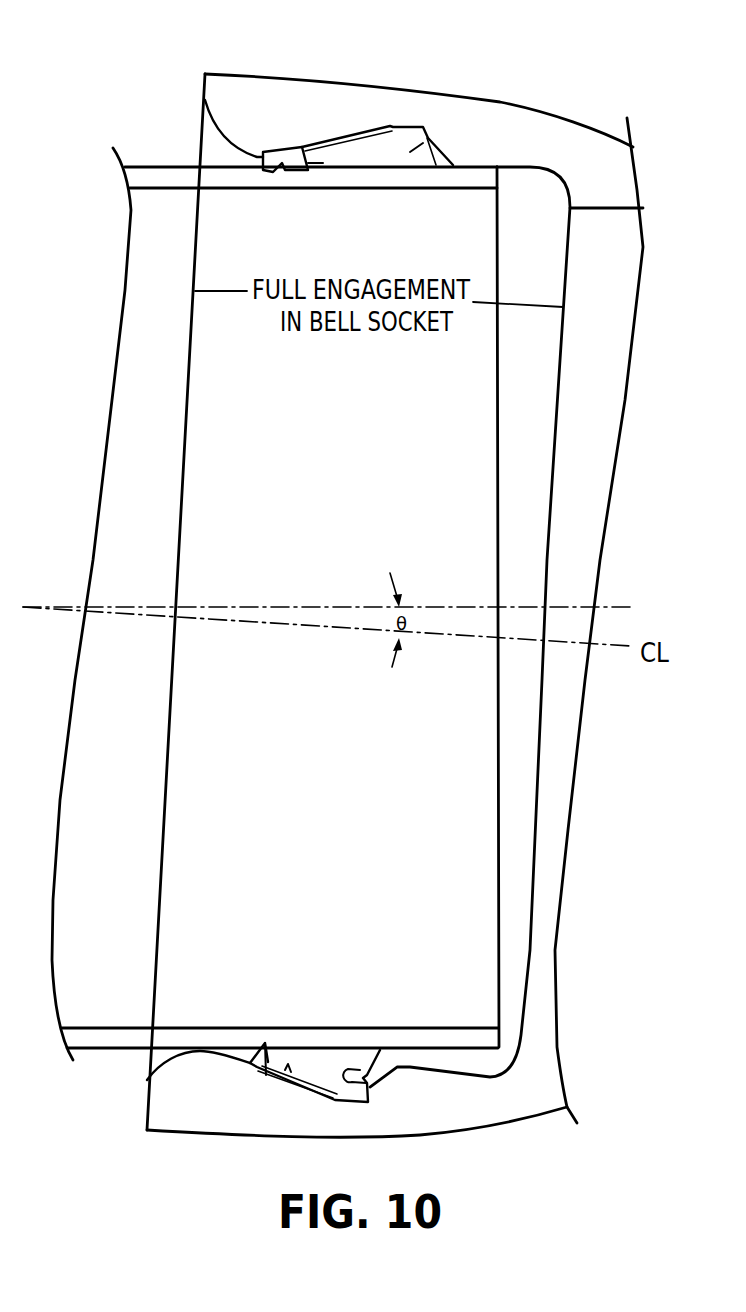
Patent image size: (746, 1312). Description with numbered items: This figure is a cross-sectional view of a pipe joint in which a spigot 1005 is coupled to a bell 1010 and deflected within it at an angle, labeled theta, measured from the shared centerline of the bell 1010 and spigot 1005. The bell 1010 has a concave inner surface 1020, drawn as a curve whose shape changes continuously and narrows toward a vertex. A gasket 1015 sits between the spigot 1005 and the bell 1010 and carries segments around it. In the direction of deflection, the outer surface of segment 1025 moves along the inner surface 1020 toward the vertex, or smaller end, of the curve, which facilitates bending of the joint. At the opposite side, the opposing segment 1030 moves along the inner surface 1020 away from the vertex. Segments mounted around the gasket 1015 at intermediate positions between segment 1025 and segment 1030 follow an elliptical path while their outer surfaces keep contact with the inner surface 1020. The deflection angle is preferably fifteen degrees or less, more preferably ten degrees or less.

The spigot 1005 is at (453, 1028).
The bell 1010 is at (578, 118).
The gasket 1015 is at (332, 1067).
The inner surface 1020 is at (343, 147).
The segment 1025 is at (283, 145).
The opposing segment 1030 is at (243, 1052).